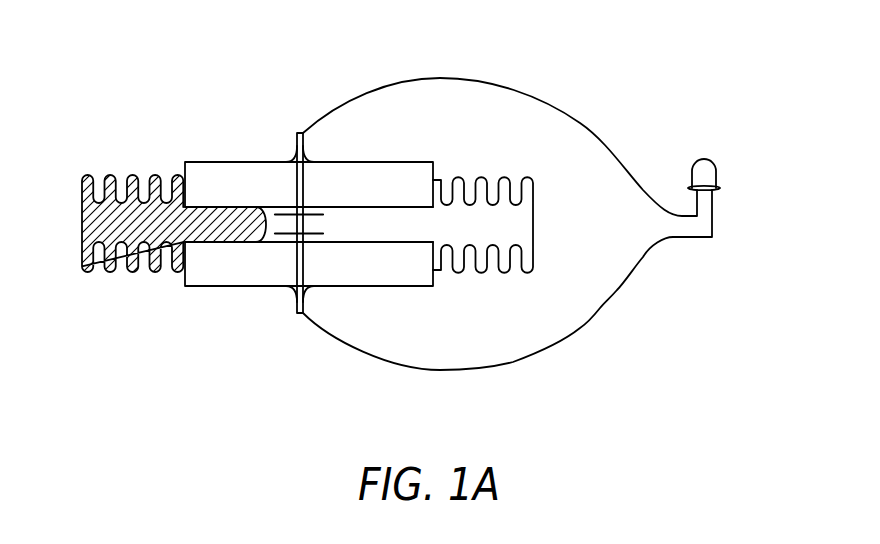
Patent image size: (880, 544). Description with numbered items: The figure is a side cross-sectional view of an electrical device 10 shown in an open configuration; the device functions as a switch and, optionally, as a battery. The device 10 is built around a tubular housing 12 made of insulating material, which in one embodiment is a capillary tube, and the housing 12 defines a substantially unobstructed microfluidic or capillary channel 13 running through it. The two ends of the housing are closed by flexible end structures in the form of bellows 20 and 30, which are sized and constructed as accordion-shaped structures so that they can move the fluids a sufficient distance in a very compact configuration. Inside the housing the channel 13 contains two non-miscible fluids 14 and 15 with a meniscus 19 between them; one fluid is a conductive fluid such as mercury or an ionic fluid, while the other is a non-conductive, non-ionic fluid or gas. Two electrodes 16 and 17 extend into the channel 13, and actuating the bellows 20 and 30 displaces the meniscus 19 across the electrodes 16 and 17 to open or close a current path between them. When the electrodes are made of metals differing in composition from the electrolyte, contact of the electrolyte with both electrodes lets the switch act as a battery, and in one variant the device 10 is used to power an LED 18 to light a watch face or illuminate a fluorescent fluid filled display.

The electrical device 10 is at (112, 64).
The tubular housing 12 is at (340, 282).
The capillary channel 13 is at (382, 235).
The non-miscible fluid 14 is at (227, 212).
The non-miscible fluid 15 is at (398, 228).
The electrode 16 is at (292, 236).
The electrode 17 is at (310, 209).
The LED 18 is at (716, 160).
The meniscus 19 is at (272, 205).
The bellows 20 is at (111, 272).
The bellows 30 is at (502, 273).